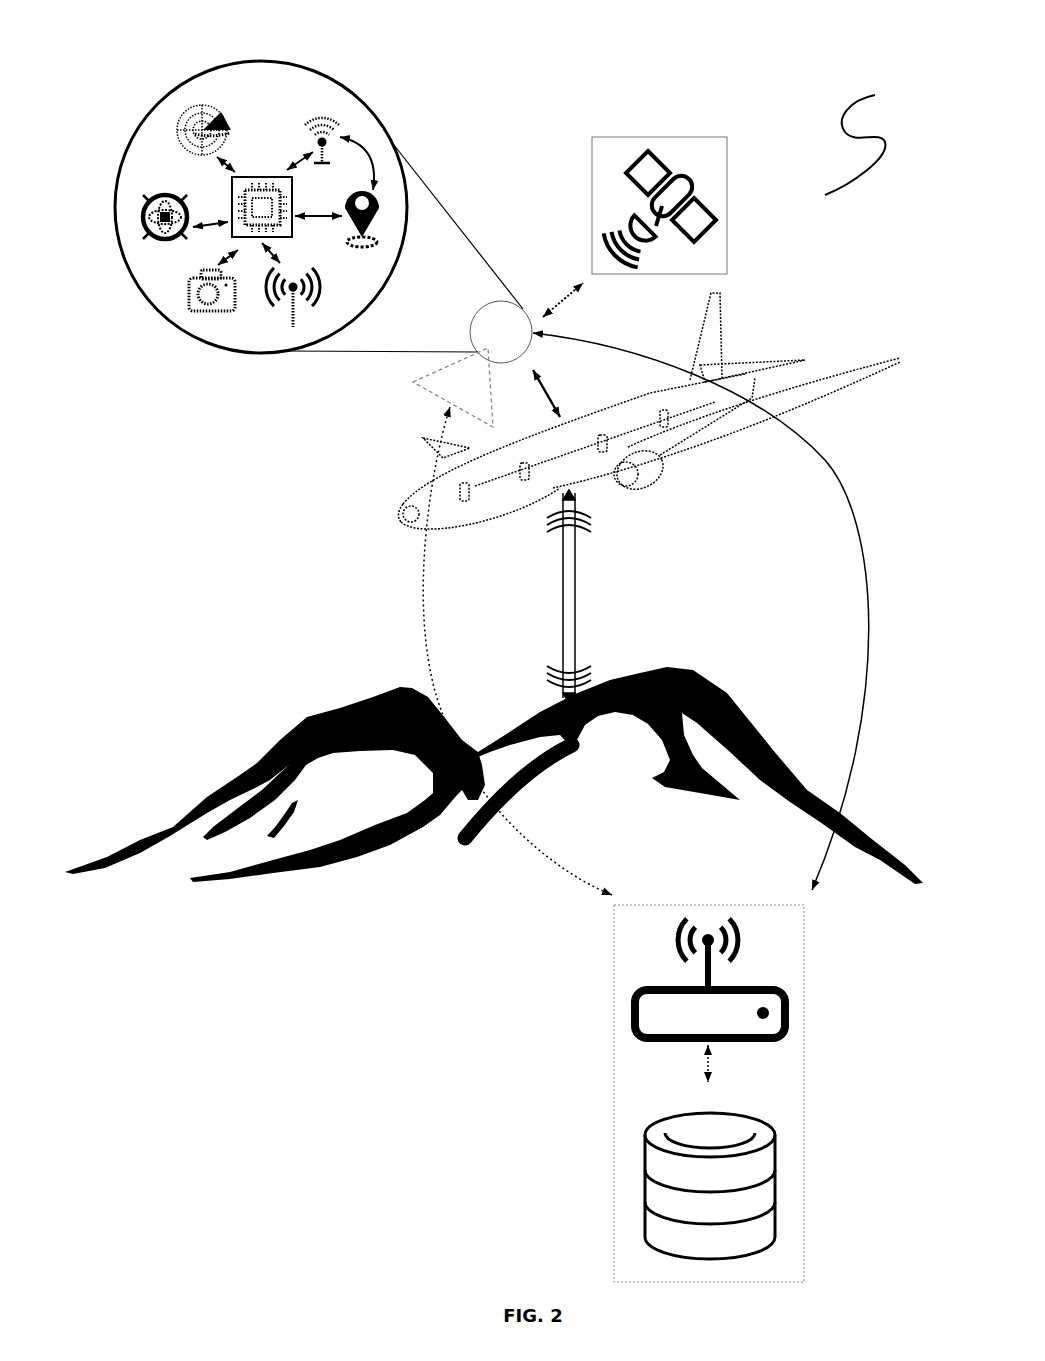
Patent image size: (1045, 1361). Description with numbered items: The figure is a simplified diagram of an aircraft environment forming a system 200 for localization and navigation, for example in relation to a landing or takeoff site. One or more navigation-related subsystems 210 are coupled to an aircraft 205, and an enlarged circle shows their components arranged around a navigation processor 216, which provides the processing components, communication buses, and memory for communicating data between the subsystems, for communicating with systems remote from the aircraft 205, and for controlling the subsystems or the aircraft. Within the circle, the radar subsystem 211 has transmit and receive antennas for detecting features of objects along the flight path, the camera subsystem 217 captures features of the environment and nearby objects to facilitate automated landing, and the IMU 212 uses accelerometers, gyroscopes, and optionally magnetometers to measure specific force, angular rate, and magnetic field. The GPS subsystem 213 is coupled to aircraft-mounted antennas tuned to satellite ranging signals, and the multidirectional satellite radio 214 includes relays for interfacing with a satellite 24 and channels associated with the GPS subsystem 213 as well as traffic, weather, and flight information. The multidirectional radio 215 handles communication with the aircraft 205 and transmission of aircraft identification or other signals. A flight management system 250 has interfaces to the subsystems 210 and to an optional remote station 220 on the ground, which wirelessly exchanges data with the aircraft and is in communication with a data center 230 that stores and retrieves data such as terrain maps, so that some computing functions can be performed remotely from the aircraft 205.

The system 200 is at (883, 121).
The aircraft 205 is at (643, 473).
The subsystems 210 is at (263, 68).
The radar subsystem 211 is at (248, 155).
The inertial measurement unit 212 is at (150, 220).
The GPS subsystem 213 is at (373, 223).
The multidirectional satellite transmission subsystem 214 is at (333, 108).
The radio transmission subsystem 215 is at (257, 317).
The navigation processor 216 is at (252, 180).
The camera subsystem 217 is at (187, 295).
The remote station 220 is at (785, 1008).
The data center 230 is at (763, 1192).
The satellite 24 is at (610, 223).
The flight management system 250 is at (453, 387).